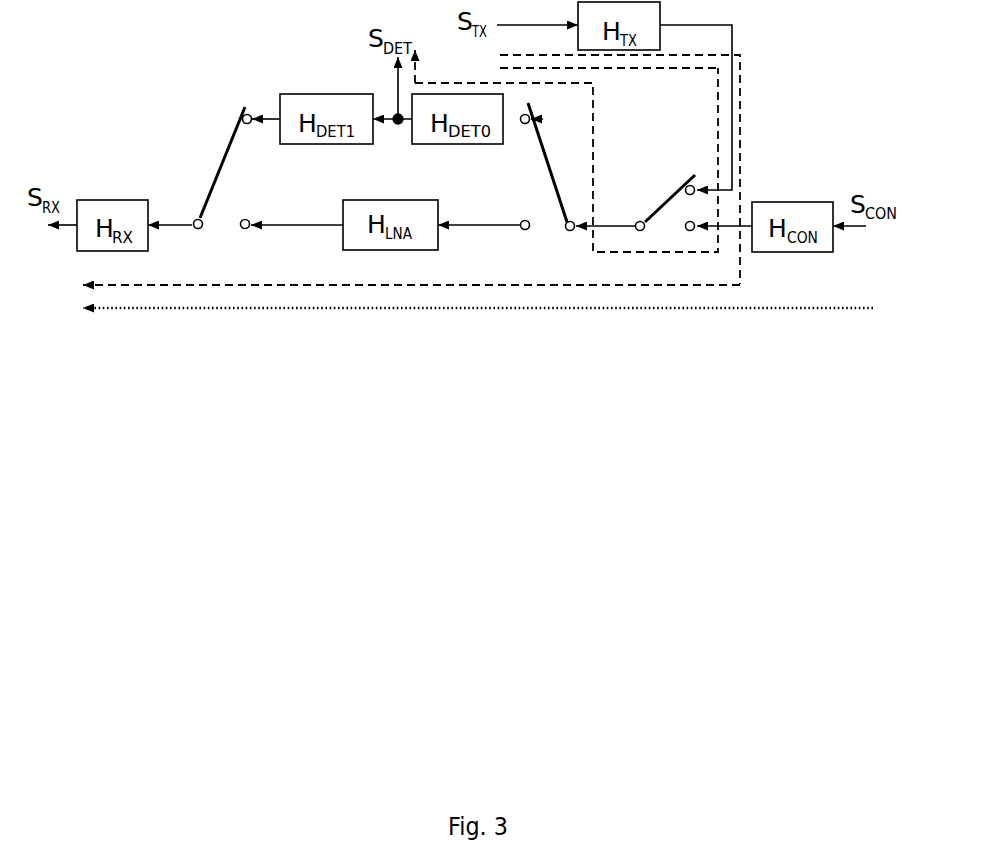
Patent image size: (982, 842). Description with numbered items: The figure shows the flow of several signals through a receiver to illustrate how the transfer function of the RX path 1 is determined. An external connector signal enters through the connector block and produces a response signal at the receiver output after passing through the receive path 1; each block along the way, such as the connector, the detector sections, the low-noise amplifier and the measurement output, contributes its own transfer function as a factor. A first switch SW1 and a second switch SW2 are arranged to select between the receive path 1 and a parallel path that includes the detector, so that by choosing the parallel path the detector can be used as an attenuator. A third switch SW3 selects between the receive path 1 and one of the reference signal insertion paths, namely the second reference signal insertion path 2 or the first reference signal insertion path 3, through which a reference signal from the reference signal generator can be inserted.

The RX path 1 is at (283, 309).
The second reference signal insertion path 2 is at (445, 286).
The first reference signal insertion path 3 is at (630, 253).
The first switch SW1 is at (227, 158).
The second switch SW2 is at (540, 143).
The third switch SW3 is at (663, 195).